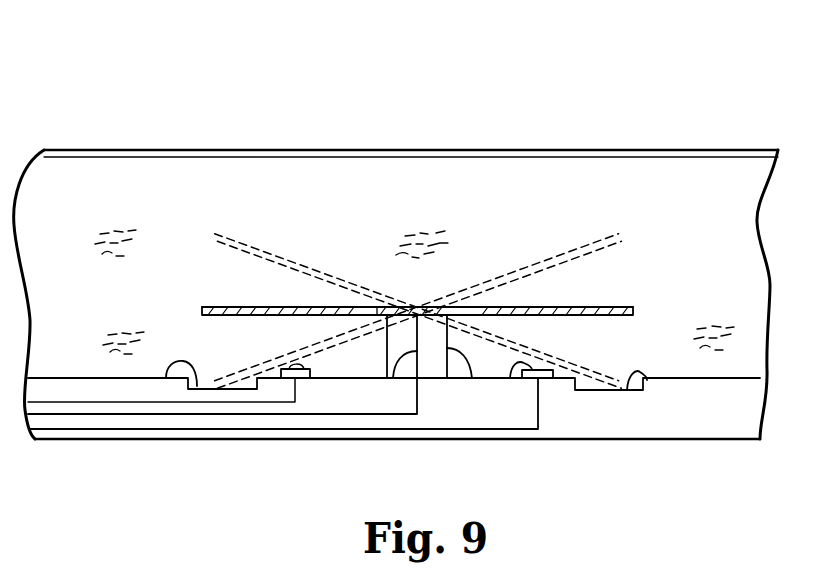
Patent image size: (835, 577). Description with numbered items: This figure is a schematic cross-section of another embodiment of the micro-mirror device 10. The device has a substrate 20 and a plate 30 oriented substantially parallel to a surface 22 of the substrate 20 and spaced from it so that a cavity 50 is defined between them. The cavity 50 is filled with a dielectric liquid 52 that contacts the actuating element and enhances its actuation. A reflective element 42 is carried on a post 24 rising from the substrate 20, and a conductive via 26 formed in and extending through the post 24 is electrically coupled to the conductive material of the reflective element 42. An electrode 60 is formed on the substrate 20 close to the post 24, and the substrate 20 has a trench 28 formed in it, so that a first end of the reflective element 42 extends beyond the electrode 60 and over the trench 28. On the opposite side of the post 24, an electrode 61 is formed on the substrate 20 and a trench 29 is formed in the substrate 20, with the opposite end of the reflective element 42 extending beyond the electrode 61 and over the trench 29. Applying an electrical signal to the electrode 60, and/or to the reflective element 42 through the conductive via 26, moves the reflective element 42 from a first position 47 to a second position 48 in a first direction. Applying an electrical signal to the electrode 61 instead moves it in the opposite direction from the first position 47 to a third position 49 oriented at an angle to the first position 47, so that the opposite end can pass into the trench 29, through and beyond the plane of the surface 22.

The micro-mirror device 10 is at (599, 108).
The substrate 20 is at (737, 413).
The surface of substrate 22 is at (733, 379).
The post 24 is at (472, 378).
The conductive via 26 is at (393, 378).
The trench 28 is at (166, 378).
The trench 29 is at (647, 380).
The plate 30 is at (734, 150).
The reflective element 42 is at (240, 307).
The first position 47 is at (618, 307).
The second position 48 is at (333, 343).
The third position 49 is at (597, 380).
The cavity 50 is at (77, 289).
The dielectric liquid 52 is at (421, 234).
The electrode 60 is at (300, 378).
The electrode 61 is at (510, 378).